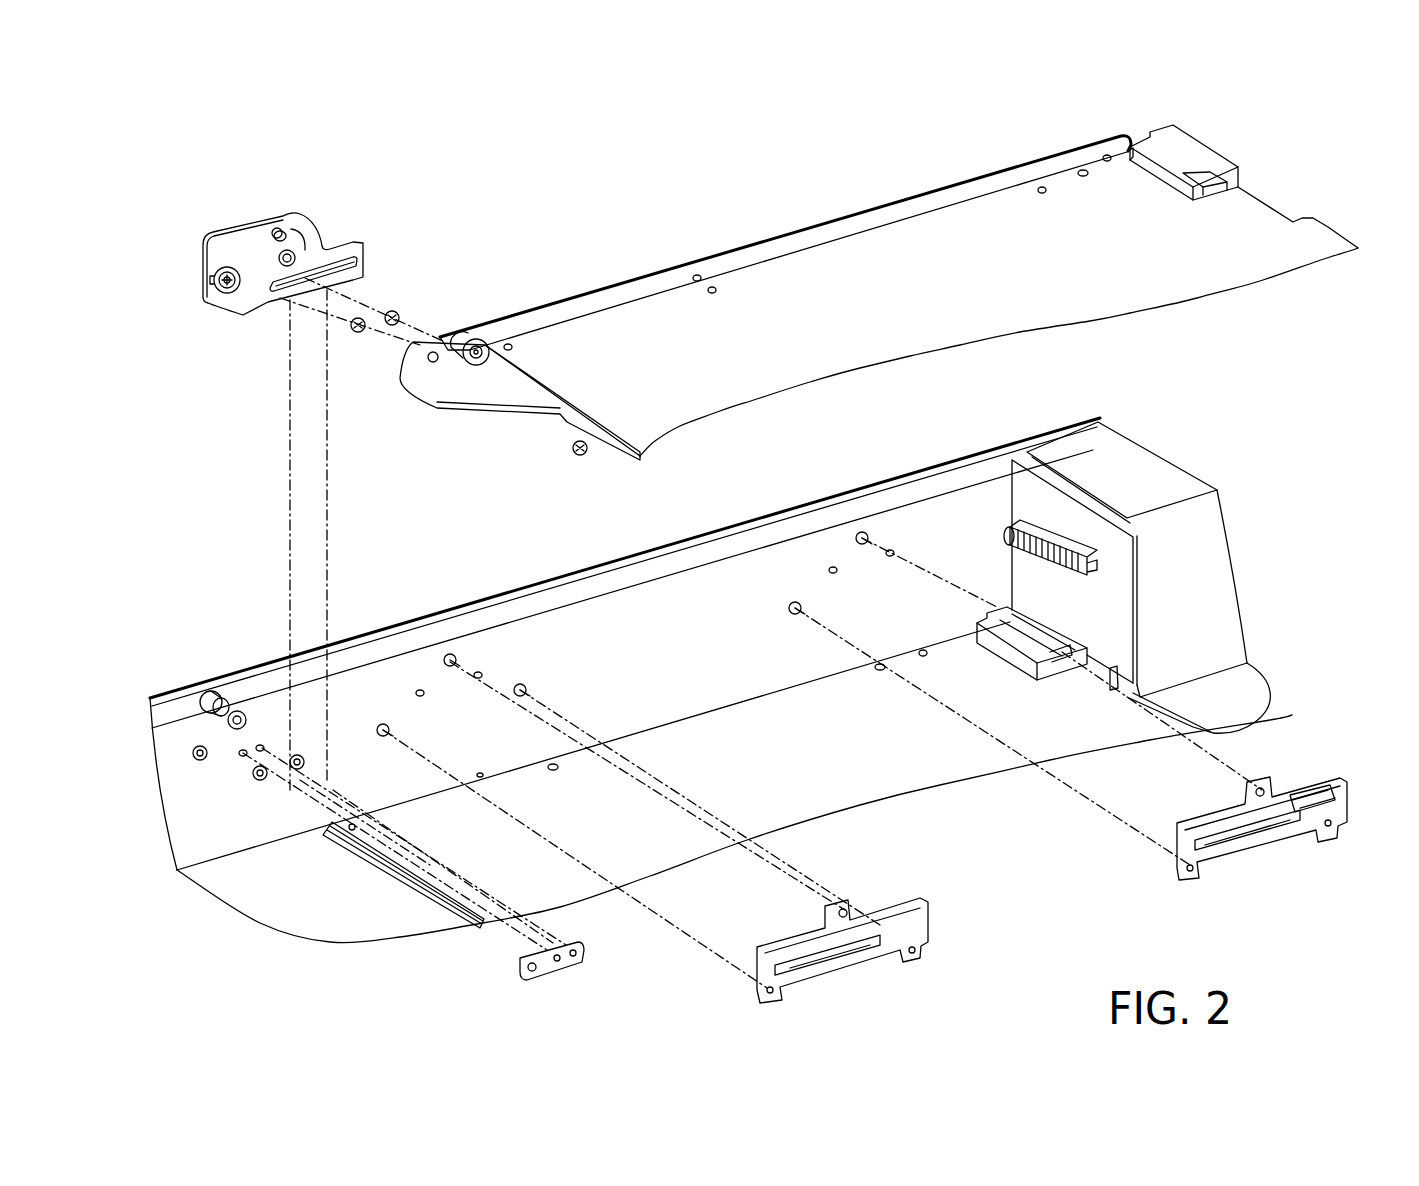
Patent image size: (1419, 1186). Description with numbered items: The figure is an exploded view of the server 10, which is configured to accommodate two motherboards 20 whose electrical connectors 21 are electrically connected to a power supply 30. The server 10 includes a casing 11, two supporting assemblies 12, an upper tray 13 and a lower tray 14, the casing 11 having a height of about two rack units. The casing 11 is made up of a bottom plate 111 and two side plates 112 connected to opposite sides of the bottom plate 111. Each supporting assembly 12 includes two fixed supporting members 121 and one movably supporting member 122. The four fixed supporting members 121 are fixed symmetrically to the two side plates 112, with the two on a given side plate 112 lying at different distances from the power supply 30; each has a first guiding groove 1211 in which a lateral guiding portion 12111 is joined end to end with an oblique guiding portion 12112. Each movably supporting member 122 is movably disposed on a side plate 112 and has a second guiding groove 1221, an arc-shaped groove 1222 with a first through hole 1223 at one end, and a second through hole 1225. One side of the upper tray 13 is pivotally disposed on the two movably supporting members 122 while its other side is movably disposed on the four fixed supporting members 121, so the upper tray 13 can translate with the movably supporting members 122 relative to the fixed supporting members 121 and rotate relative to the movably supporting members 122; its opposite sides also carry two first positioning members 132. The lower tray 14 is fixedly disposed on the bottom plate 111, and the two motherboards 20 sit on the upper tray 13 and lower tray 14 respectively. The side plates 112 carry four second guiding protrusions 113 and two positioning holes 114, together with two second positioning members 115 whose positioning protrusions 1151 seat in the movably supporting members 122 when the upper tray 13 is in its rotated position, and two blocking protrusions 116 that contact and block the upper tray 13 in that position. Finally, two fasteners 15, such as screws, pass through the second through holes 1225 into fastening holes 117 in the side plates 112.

The server 10 is at (133, 139).
The casing 11 is at (528, 572).
The bottom plate 111 is at (302, 893).
The side plate 112 is at (207, 815).
The second guiding protrusion 113 is at (300, 755).
The positioning hole 114 is at (250, 722).
The second positioning member 115 is at (578, 968).
The positioning protrusion 1151 is at (535, 972).
The blocking protrusion 116 is at (210, 700).
The fastening hole 117 is at (198, 768).
The supporting assembly 12 is at (130, 430).
The fixed supporting member 121 is at (888, 962).
The first guiding groove 1211 is at (1312, 835).
The lateral guiding portion 12111 is at (1325, 795).
The oblique guiding portion 12112 is at (1298, 788).
The movably supporting member 122 is at (236, 218).
The second guiding groove 1221 is at (282, 305).
The arc-shaped groove 1222 is at (378, 215).
The first through hole 1223 is at (290, 226).
The second through hole 1225 is at (198, 265).
The upper tray 13 is at (446, 380).
The first positioning member 132 is at (478, 338).
The lower tray 14 is at (400, 872).
The fastener 15 is at (222, 288).
The motherboard 20 is at (930, 258).
The electrical connector 21 is at (1190, 152).
The power supply 30 is at (1120, 460).